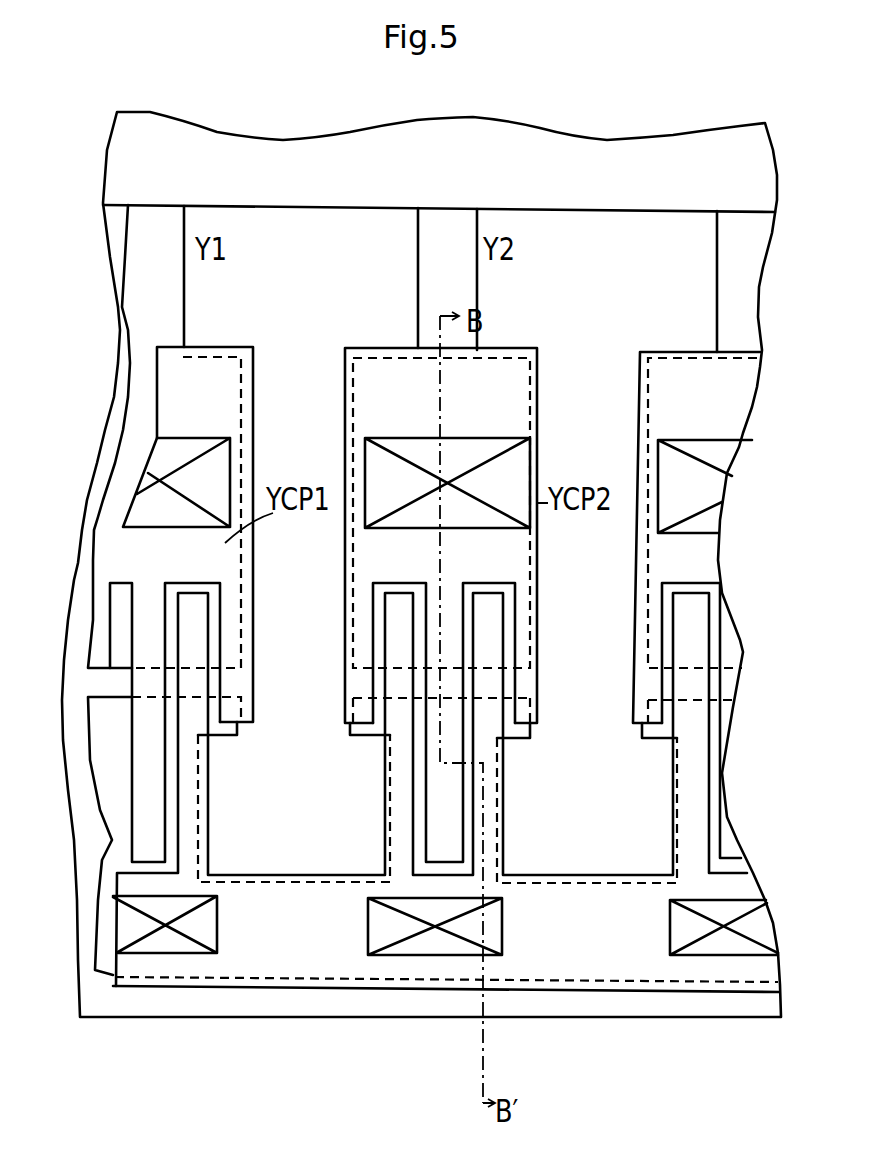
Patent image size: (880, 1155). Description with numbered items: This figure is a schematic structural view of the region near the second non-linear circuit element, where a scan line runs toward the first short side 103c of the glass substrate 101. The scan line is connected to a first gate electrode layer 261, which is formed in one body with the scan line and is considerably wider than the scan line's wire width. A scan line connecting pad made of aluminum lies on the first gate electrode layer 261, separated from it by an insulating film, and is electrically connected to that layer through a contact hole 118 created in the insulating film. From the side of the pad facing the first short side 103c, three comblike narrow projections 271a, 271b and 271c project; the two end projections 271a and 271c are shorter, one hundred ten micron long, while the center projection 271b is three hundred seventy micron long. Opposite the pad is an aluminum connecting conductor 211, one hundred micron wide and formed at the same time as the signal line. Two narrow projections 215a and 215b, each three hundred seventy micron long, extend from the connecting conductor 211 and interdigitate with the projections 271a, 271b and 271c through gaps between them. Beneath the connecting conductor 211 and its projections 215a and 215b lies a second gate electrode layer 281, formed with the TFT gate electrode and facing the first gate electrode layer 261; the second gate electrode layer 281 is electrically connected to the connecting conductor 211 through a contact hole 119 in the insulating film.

The glass substrate 101 is at (200, 1002).
The first short side 103c is at (487, 1020).
The contact hole 118 is at (183, 452).
The contact hole 119 is at (215, 935).
The connecting conductor 211 is at (615, 970).
The narrow projection 215a is at (383, 777).
The narrow projection 215b is at (207, 807).
The first gate electrode layer 261 is at (100, 578).
The narrow projection 271a is at (345, 592).
The narrow projection 271b is at (148, 648).
The narrow projection 271c is at (240, 603).
The second gate electrode layer 281 is at (115, 765).